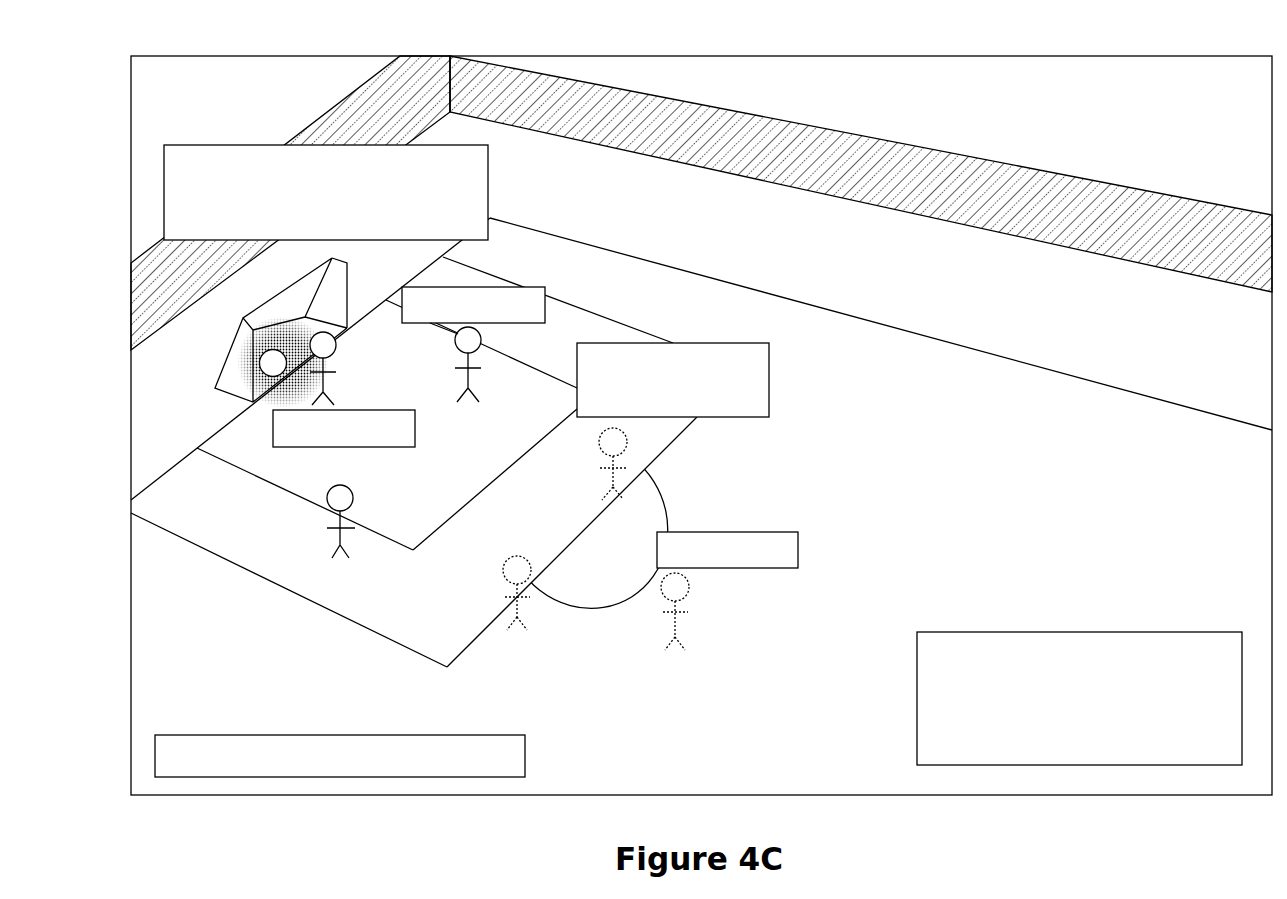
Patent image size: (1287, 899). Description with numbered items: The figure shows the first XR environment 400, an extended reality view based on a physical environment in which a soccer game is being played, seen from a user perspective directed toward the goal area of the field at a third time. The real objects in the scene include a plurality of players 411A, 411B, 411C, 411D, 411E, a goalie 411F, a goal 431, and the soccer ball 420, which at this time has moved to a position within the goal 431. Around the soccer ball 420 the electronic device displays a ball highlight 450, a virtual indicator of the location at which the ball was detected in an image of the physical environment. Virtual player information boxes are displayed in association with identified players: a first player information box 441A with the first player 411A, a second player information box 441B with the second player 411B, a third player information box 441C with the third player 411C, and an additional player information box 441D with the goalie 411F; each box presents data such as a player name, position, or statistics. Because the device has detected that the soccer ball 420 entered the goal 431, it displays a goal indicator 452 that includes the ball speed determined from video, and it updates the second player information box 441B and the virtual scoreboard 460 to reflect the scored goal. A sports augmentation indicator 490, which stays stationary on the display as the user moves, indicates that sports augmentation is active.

The first XR environment 400 is at (268, 55).
The goal indicator 452 is at (218, 145).
The goal 431 is at (348, 270).
The ball highlight 450 is at (243, 378).
The soccer ball 420 is at (270, 377).
The first player 411A is at (500, 341).
The second player 411B is at (641, 440).
The third player 411C is at (705, 652).
The player 411D is at (524, 651).
The player 411E is at (328, 568).
The goalie 411F is at (354, 345).
The first player information box 441A is at (533, 287).
The second player information box 441B is at (712, 343).
The third player information box 441C is at (748, 532).
The additional player information box 441D is at (373, 448).
The virtual scoreboard 460 is at (1077, 632).
The sports augmentation indicator 490 is at (257, 735).